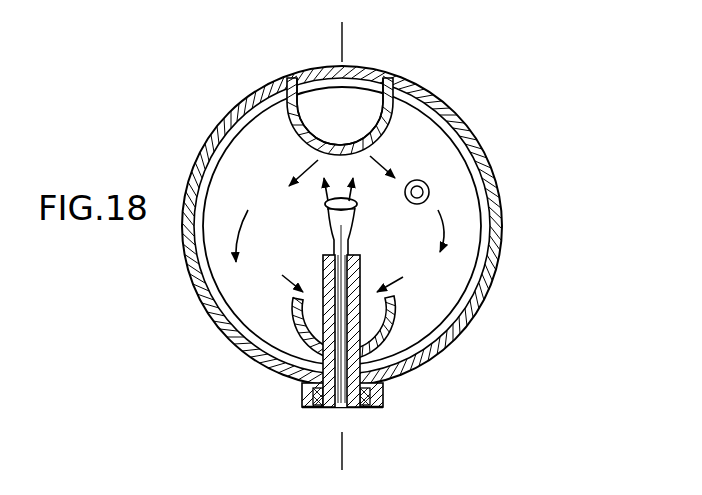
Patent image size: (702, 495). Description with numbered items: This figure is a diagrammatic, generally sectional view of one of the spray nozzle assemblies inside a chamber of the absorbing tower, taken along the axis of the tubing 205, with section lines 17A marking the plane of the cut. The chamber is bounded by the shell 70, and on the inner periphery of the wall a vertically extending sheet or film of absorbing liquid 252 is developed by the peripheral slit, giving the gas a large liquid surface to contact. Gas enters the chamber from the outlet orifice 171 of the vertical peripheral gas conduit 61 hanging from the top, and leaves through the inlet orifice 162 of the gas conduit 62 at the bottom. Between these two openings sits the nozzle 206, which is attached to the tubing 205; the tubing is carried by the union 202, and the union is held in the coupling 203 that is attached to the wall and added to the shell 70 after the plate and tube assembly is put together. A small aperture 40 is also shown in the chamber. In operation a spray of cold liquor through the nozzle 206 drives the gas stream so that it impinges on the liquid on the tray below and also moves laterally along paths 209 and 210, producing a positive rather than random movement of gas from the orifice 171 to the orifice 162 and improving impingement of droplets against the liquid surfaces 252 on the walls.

The section line 17A is at (351, 44).
The aperture 40 is at (427, 178).
The gas conduit 61 is at (380, 113).
The gas conduit 62 is at (388, 314).
The shell 70 is at (503, 212).
The inlet orifice 162 is at (302, 312).
The outlet orifice 171 is at (340, 147).
The union 202 is at (360, 408).
The coupling 203 is at (384, 391).
The tubing 205 is at (352, 278).
The nozzle 206 is at (333, 216).
The lateral gas path 209 is at (400, 162).
The lateral gas path 210 is at (316, 165).
The vertically extending liquid film 252 is at (478, 157).